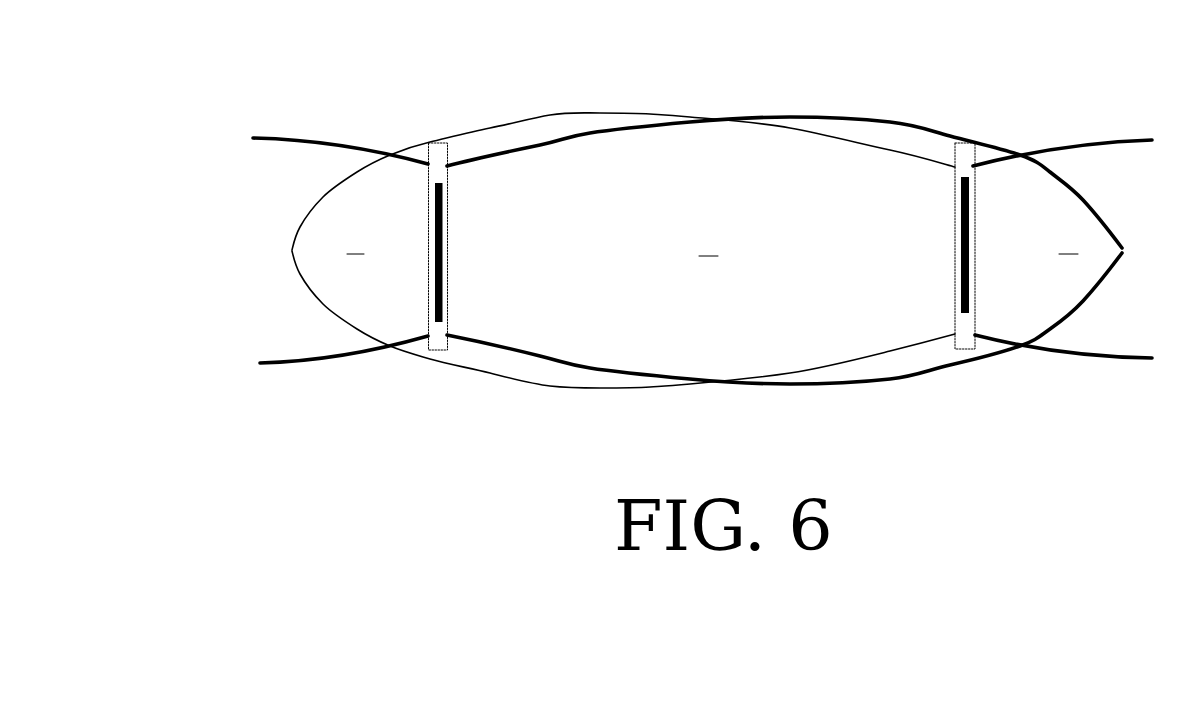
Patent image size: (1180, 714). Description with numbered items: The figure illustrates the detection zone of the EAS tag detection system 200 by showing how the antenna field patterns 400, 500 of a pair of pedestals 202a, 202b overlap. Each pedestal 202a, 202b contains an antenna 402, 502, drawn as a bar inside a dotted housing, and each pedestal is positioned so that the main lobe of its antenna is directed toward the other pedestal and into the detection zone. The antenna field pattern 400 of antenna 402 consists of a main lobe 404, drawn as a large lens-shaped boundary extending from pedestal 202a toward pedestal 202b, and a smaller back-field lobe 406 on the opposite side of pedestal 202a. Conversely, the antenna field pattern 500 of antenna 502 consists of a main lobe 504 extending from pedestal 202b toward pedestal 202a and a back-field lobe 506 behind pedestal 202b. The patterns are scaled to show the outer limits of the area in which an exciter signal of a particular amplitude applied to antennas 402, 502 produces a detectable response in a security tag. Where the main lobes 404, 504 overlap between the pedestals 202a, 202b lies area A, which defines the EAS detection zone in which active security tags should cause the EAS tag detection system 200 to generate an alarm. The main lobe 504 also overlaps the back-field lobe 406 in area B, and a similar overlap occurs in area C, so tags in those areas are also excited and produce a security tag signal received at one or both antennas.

The EAS tag detection system 200 is at (336, 94).
The pedestal 202a is at (448, 177).
The pedestal 202b is at (955, 187).
The antenna field pattern 400 is at (679, 284).
The antenna 402 is at (443, 243).
The main lobe 404 is at (943, 374).
The back-field lobe 406 is at (266, 139).
The antenna field pattern 500 is at (735, 269).
The antenna 502 is at (962, 245).
The main lobe 504 is at (463, 373).
The back-field lobe 506 is at (1137, 139).